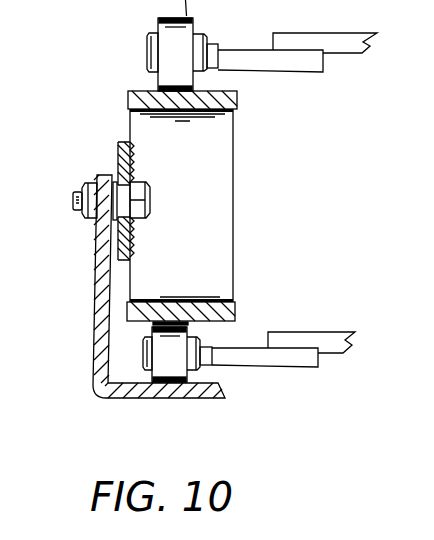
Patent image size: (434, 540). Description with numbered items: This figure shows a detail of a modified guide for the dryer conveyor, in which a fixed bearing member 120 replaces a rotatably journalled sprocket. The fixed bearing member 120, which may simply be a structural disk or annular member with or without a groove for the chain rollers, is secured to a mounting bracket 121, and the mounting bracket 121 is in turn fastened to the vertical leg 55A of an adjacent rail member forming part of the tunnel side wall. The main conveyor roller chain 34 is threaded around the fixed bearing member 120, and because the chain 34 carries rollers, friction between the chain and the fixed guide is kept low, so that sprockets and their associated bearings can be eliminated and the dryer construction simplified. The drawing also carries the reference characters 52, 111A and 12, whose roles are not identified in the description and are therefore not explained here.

The main conveyor roller chain 34 is at (177, 48).
The rod 52 is at (323, 60).
The fixed bearing member 120 is at (222, 163).
The threaded boss 111A is at (118, 180).
The mounting bracket 121 is at (132, 242).
The vertical leg 55A is at (93, 290).
The adjacent component 12 is at (424, 238).